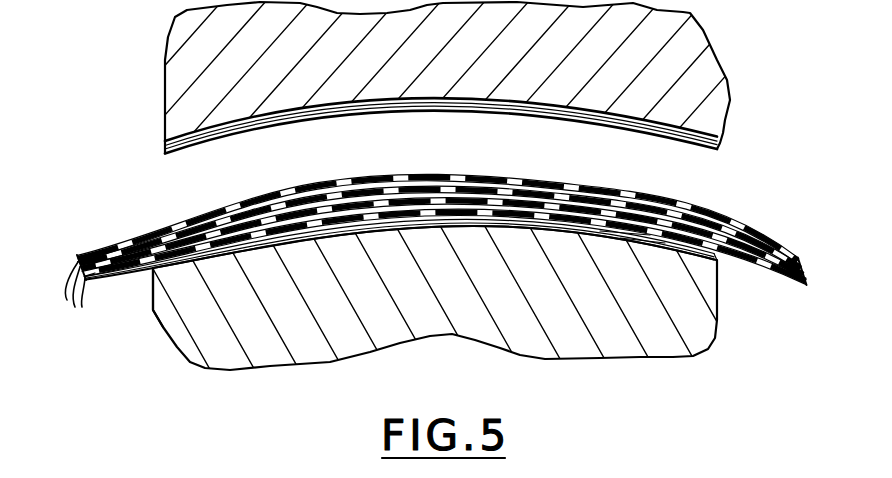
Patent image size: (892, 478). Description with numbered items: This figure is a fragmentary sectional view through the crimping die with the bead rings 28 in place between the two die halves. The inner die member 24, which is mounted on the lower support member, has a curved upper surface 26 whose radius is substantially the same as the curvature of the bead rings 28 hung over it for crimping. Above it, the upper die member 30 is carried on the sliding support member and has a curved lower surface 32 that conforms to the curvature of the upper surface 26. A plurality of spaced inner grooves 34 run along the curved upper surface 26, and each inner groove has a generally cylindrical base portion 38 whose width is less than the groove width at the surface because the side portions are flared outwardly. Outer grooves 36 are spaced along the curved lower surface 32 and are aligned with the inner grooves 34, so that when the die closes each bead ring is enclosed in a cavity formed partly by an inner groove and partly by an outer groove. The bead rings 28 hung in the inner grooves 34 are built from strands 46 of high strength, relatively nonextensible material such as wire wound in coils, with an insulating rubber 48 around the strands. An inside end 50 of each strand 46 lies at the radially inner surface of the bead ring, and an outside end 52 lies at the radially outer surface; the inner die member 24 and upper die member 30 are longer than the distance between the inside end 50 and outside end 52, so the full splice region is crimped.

The inner die member 24 is at (454, 292).
The curved upper surface 26 is at (723, 261).
The bead rings 28 is at (450, 229).
The upper die member 30 is at (712, 68).
The curved lower surface 32 is at (703, 148).
The inner grooves 34 is at (640, 239).
The outer grooves 36 is at (650, 127).
The base portion 38 is at (648, 243).
The strands 46 is at (72, 298).
The rubber 48 is at (124, 265).
The inside end 50 is at (150, 262).
The outside end 52 is at (722, 222).